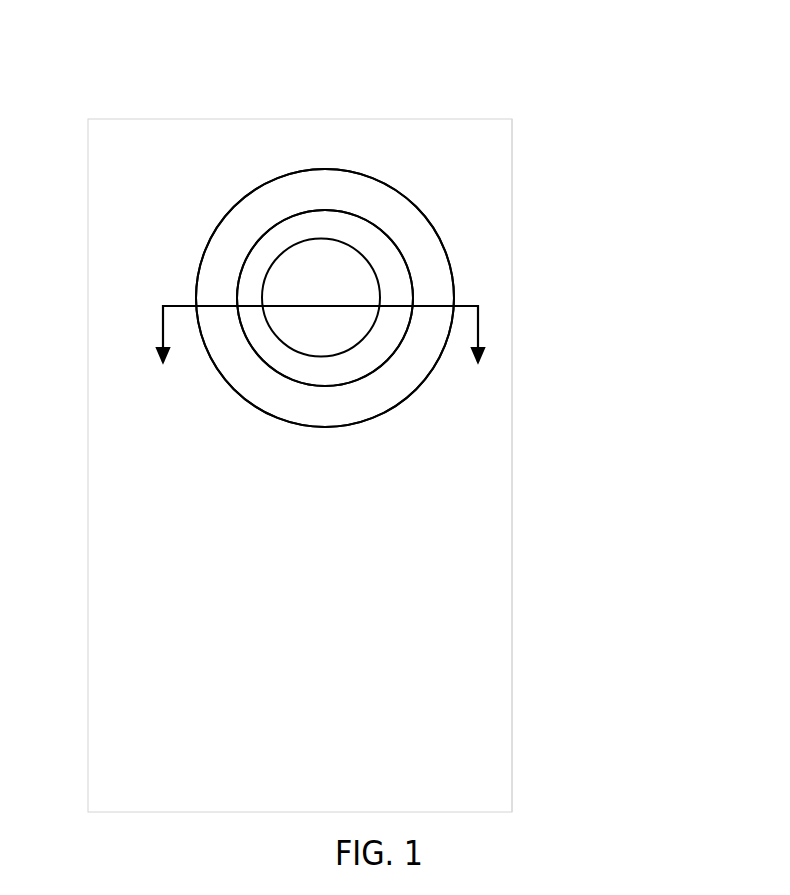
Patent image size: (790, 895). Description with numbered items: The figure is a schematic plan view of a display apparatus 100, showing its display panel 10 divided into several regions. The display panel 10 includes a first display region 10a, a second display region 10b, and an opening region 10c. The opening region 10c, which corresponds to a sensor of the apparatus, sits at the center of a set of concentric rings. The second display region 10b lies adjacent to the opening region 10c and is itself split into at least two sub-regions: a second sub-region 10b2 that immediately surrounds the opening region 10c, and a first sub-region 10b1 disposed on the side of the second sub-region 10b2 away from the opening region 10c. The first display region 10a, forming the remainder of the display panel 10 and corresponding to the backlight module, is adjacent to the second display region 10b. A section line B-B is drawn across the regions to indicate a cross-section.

The display apparatus 100 is at (656, 34).
The display panel 10 is at (511, 313).
The first display region 10a is at (479, 283).
The second display region 10b is at (472, 48).
The first sub-region 10b1 is at (403, 238).
The second sub-region 10b2 is at (355, 242).
The opening region 10c is at (333, 268).